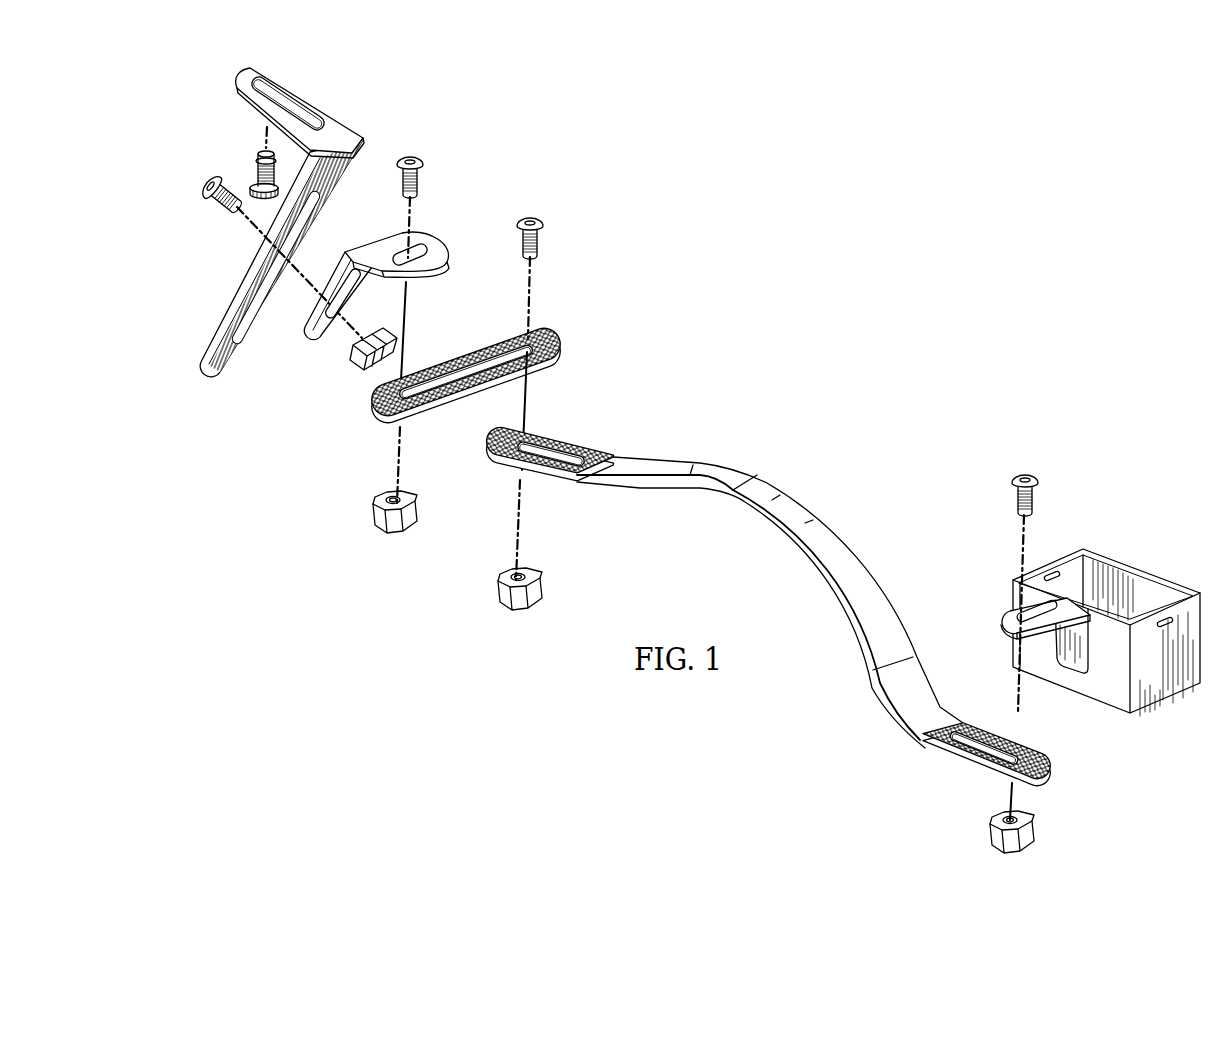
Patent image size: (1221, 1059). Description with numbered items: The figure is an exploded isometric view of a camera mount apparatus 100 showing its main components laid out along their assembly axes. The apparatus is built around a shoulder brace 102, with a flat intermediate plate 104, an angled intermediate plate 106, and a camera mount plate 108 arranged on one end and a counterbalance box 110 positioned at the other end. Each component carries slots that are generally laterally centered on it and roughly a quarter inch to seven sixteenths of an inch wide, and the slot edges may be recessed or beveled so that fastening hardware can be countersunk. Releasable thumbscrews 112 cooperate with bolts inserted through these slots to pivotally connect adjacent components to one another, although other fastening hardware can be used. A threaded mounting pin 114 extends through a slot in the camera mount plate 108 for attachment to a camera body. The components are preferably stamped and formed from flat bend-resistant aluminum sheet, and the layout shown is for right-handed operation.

The camera mount apparatus 100 is at (817, 300).
The shoulder brace 102 is at (846, 547).
The flat intermediate plate 104 is at (541, 327).
The angled intermediate plate 106 is at (428, 242).
The camera mount plate 108 is at (332, 108).
The counterbalance box 110 is at (1157, 697).
The releasable thumbscrews 112 is at (356, 366).
The threaded mounting pin 114 is at (251, 166).